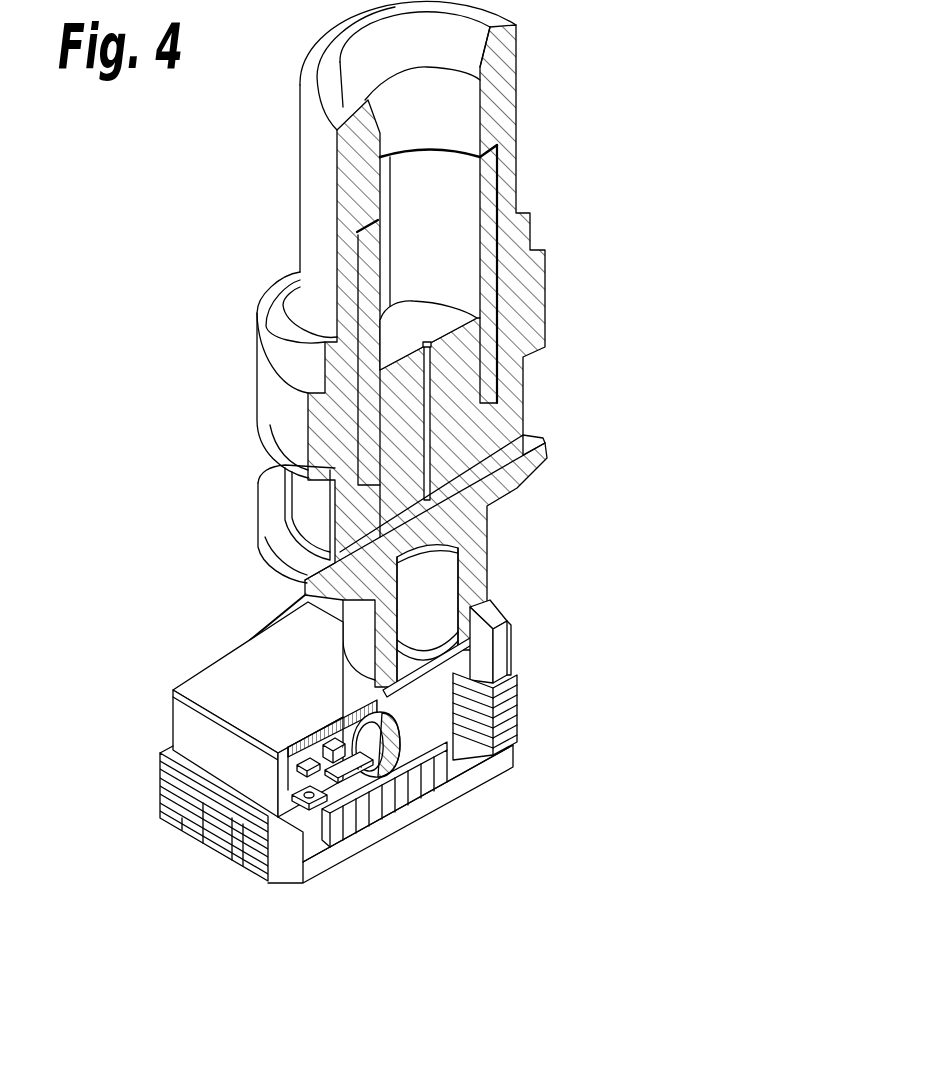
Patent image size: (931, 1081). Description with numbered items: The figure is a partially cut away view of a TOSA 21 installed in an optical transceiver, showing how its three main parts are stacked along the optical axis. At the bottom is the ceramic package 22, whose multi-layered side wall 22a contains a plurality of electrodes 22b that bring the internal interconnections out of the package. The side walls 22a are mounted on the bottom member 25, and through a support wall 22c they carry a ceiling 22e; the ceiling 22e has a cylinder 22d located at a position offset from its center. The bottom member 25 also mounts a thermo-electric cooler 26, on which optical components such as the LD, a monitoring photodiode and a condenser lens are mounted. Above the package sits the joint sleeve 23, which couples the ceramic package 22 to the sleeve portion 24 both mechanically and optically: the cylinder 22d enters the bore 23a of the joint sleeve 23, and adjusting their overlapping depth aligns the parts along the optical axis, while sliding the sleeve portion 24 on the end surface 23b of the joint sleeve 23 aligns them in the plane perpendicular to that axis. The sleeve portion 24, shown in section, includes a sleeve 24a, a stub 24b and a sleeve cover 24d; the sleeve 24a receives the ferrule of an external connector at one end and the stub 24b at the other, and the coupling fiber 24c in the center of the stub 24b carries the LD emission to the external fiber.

The TOSA 21 is at (575, 375).
The ceramic package 22 is at (160, 704).
The side wall 22a is at (517, 707).
The electrodes 22b is at (235, 862).
The support wall 22c is at (505, 657).
The cylinder 22d is at (500, 610).
The ceiling 22e is at (243, 670).
The joint sleeve 23 is at (267, 557).
The bore 23a is at (440, 603).
The end surface 23b is at (275, 517).
The sleeve portion 24 is at (300, 230).
The sleeve 24a is at (487, 178).
The stub 24b is at (470, 358).
The coupling fiber 24c is at (427, 340).
The sleeve cover 24d is at (340, 175).
The bottom member 25 is at (370, 838).
The thermo-electric cooler 26 is at (433, 787).